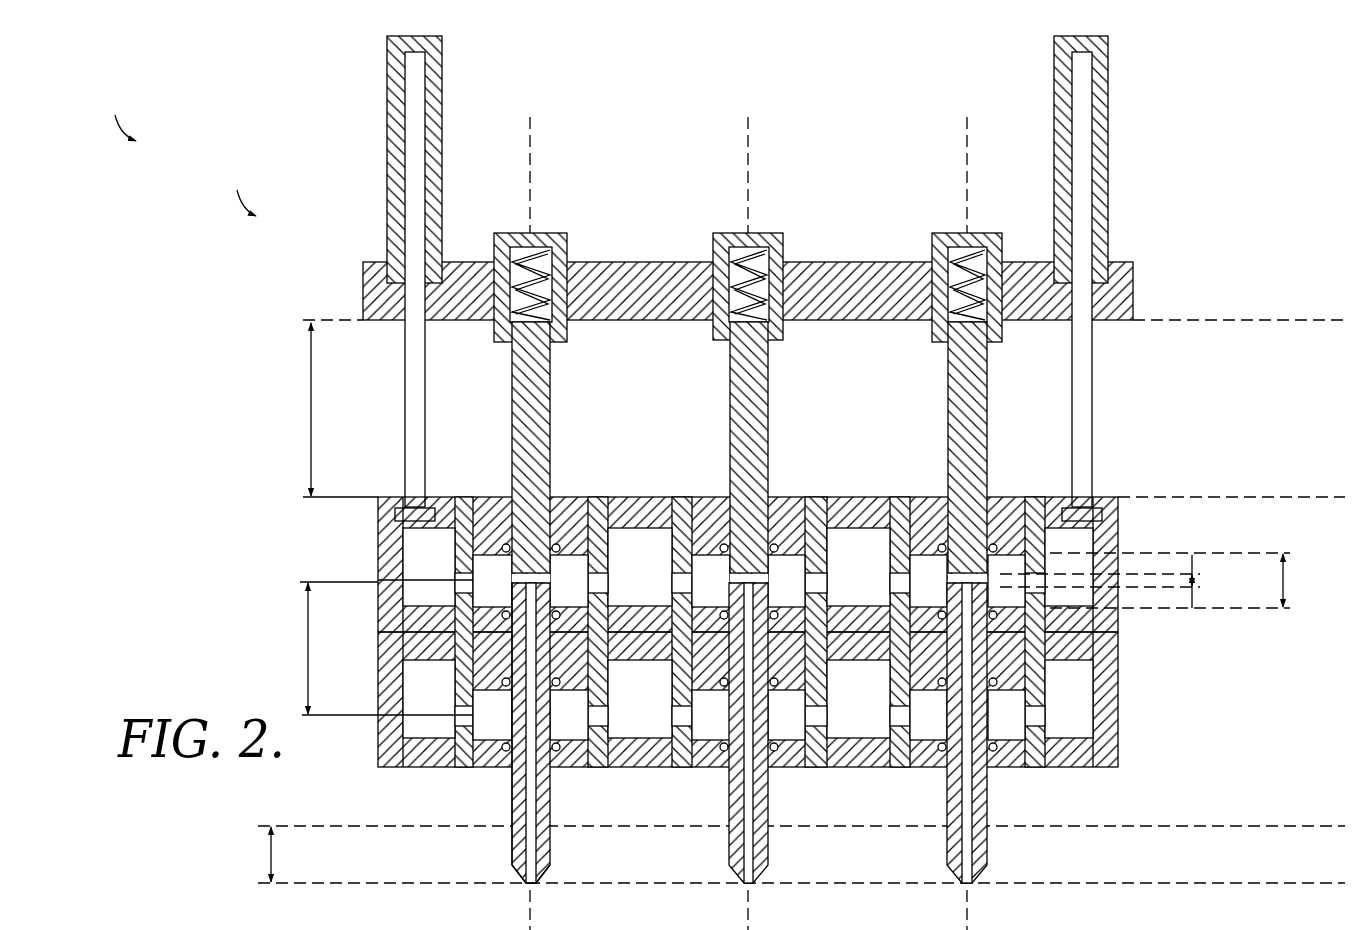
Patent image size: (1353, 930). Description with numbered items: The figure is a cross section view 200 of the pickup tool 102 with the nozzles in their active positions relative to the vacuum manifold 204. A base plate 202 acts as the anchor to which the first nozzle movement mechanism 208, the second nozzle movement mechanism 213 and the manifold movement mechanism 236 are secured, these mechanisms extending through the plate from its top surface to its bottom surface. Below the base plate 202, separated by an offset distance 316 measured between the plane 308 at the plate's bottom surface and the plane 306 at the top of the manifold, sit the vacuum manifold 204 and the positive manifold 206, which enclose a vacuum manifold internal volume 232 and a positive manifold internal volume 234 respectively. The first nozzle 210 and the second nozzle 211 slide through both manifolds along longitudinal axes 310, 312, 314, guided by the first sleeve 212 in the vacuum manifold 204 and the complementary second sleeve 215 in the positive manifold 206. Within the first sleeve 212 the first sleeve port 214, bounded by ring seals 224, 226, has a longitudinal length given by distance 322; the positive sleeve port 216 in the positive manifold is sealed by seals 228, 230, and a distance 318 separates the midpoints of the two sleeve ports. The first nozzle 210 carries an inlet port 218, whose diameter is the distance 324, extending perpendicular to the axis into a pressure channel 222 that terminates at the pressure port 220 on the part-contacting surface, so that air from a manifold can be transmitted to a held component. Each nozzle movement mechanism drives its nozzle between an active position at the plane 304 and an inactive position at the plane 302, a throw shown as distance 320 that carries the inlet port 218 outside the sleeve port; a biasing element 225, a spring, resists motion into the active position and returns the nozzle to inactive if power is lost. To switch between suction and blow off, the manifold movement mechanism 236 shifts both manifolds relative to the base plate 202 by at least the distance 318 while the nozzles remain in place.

The cross section view 200 is at (116, 113).
The pickup tool 102 is at (238, 187).
The base plate 202 is at (1133, 288).
The vacuum manifold 204 is at (1120, 524).
The positive manifold 206 is at (1120, 690).
The first nozzle movement mechanism 208 is at (553, 232).
The first nozzle 210 is at (519, 756).
The second nozzle 211 is at (771, 779).
The first sleeve 212 is at (482, 527).
The second nozzle movement mechanism 213 is at (770, 232).
The first sleeve port 214 is at (490, 572).
The second sleeve 215 is at (490, 668).
The positive sleeve port 216 is at (495, 722).
The inlet port 218 is at (558, 578).
The pressure port 220 is at (534, 886).
The pressure channel 222 is at (524, 802).
The seal 224 is at (557, 545).
The biasing element 225 is at (773, 300).
The seal 226 is at (558, 612).
The seal 228 is at (557, 700).
The seal 230 is at (554, 750).
The vacuum manifold internal volume 232 is at (642, 530).
The positive manifold internal volume 234 is at (657, 714).
The manifold movement mechanism 236 is at (443, 38).
The plane 302 is at (1242, 826).
The plane 304 is at (1242, 883).
The plane 306 is at (1242, 497).
The plane 308 is at (1242, 320).
The longitudinal axis 310 is at (534, 139).
The longitudinal axis 312 is at (752, 139).
The longitudinal axis 314 is at (971, 139).
The offset distance 316 is at (311, 409).
The distance 318 is at (308, 650).
The distance 320 is at (271, 855).
The distance 322 is at (1283, 583).
The distance 324 is at (1192, 590).